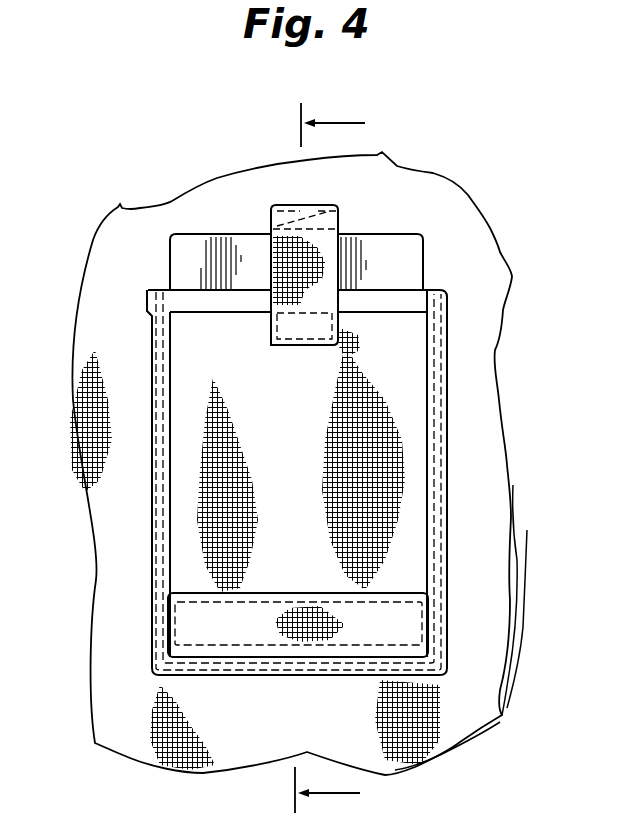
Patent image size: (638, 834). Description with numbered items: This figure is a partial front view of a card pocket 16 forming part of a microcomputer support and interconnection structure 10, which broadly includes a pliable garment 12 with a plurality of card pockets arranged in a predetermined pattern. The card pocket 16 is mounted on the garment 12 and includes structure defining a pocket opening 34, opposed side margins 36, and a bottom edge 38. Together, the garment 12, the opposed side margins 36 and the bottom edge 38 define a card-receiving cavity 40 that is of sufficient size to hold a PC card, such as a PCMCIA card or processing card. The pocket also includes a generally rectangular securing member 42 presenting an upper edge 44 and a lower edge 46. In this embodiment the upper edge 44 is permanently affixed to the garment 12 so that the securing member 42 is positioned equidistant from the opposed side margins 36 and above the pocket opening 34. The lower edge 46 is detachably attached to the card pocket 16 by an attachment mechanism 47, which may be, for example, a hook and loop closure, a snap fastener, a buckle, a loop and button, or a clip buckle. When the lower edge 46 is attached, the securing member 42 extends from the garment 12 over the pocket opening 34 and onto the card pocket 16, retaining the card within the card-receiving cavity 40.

The microcomputer support and interconnection structure 10 is at (346, 458).
The pliable garment 12 is at (482, 643).
The microcomputer card pocket 16 is at (452, 362).
The pocket opening 34 is at (416, 283).
The opposed side margins 36 is at (166, 576).
The bottom edge 38 is at (233, 663).
The card-receiving cavity 40 is at (184, 288).
The securing member 42 is at (325, 258).
The upper edge 44 is at (327, 203).
The lower edge 46 is at (345, 343).
The attachment mechanism 47 is at (340, 330).